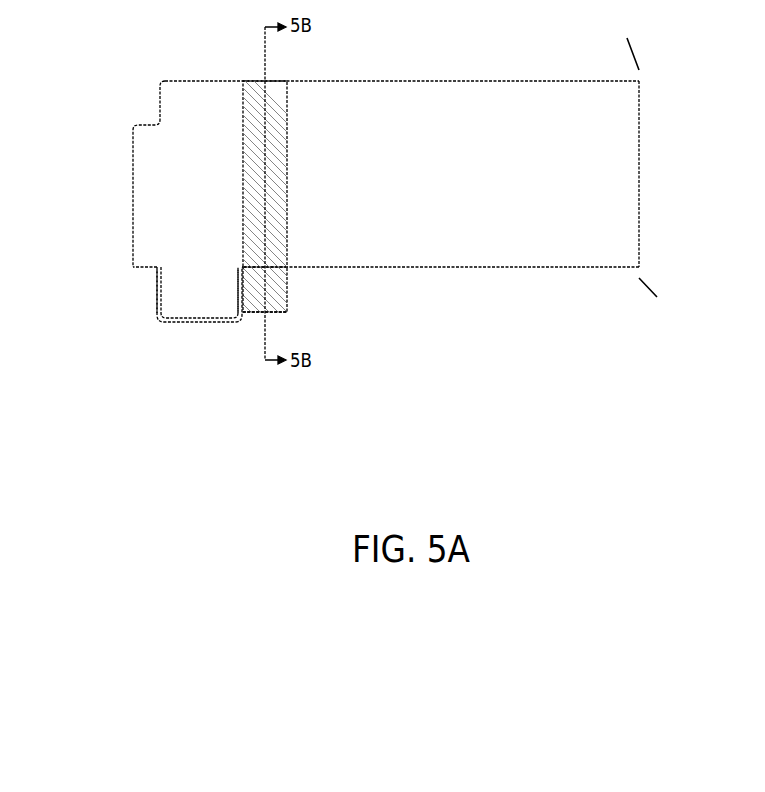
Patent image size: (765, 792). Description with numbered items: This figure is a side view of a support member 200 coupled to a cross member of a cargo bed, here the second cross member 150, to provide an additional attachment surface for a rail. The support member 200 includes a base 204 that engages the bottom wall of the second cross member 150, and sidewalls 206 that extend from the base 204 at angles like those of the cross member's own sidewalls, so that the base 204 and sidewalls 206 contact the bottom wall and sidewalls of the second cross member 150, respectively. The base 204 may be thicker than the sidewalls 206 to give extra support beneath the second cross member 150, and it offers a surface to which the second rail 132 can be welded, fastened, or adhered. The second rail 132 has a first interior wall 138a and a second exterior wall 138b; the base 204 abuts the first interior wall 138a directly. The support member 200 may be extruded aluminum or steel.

The second cross member 150 is at (424, 105).
The sidewalls 206 is at (276, 107).
The support member 200 is at (275, 288).
The base 204 is at (252, 313).
The second rail 132 is at (172, 307).
The first interior wall 138a is at (228, 302).
The second exterior wall 138b is at (155, 272).